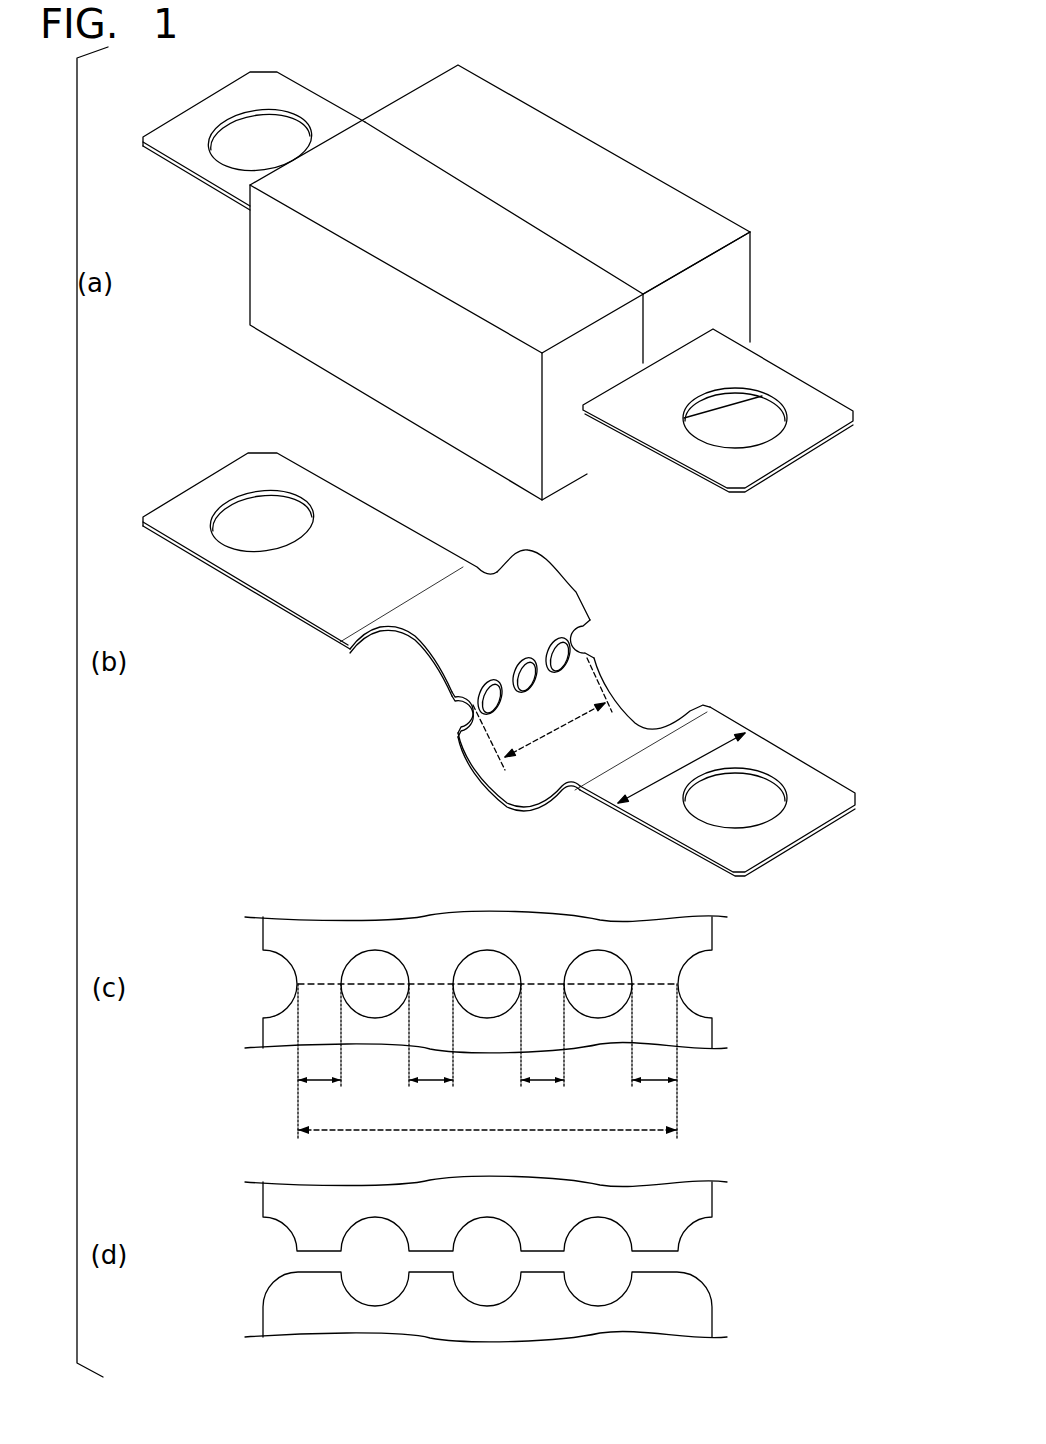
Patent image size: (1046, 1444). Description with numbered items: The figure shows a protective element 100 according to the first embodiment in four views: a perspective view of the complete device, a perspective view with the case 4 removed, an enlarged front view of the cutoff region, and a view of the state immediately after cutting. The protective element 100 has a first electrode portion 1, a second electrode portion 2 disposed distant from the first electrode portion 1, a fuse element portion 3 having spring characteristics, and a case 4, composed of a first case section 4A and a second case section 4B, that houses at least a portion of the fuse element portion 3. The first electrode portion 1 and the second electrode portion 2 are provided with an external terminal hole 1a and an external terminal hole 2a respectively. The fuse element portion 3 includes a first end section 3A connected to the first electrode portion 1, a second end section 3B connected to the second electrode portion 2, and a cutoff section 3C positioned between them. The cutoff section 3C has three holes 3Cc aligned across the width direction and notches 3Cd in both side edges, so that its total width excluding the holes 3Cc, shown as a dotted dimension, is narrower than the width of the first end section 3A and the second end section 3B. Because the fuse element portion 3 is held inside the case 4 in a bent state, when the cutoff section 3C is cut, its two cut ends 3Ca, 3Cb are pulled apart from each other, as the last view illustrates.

The protective element 100 is at (814, 120).
The first electrode portion 1 is at (222, 106).
The external terminal hole 1a is at (230, 150).
The second electrode portion 2 is at (813, 415).
The external terminal hole 2a is at (768, 398).
The fuse element portion 3 is at (722, 525).
The first end section 3A is at (562, 568).
The second end section 3B is at (627, 713).
The cutoff section 3C is at (606, 645).
The cut end 3Ca is at (663, 1254).
The cut end 3Cb is at (663, 1268).
The holes 3Cc is at (552, 648).
The notches 3Cd is at (586, 642).
The case 4 is at (688, 97).
The first case section 4A is at (455, 235).
The second case section 4B is at (577, 205).